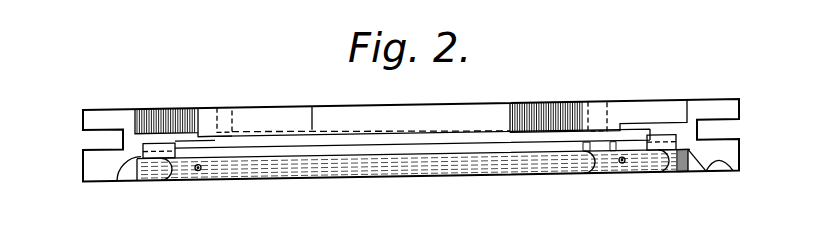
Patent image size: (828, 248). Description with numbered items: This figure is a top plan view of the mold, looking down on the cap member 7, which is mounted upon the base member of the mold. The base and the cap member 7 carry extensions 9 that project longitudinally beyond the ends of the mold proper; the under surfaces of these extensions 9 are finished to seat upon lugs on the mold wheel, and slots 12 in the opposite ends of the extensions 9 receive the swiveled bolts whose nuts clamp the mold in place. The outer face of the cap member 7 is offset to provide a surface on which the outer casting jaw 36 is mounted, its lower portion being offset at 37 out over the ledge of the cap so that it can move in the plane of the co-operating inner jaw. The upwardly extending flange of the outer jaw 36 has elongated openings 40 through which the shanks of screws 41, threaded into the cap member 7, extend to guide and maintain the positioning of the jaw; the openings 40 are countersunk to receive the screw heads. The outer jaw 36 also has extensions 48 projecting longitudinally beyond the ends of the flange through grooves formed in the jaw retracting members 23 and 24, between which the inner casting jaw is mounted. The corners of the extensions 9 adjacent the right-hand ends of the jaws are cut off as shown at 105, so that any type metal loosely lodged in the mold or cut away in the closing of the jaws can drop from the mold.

The extensions 9 is at (97, 117).
The slots 12 is at (95, 141).
The cap member 7 is at (163, 120).
The screws 41 is at (228, 113).
The outer casting jaw 36 is at (338, 158).
The jaw retracting member 23 is at (163, 158).
The jaw retracting member 24 is at (658, 161).
The offset lower portion 37 is at (408, 172).
The elongated openings 40 is at (232, 161).
The extensions 48 is at (118, 185).
The cut-off corners 105 is at (727, 182).